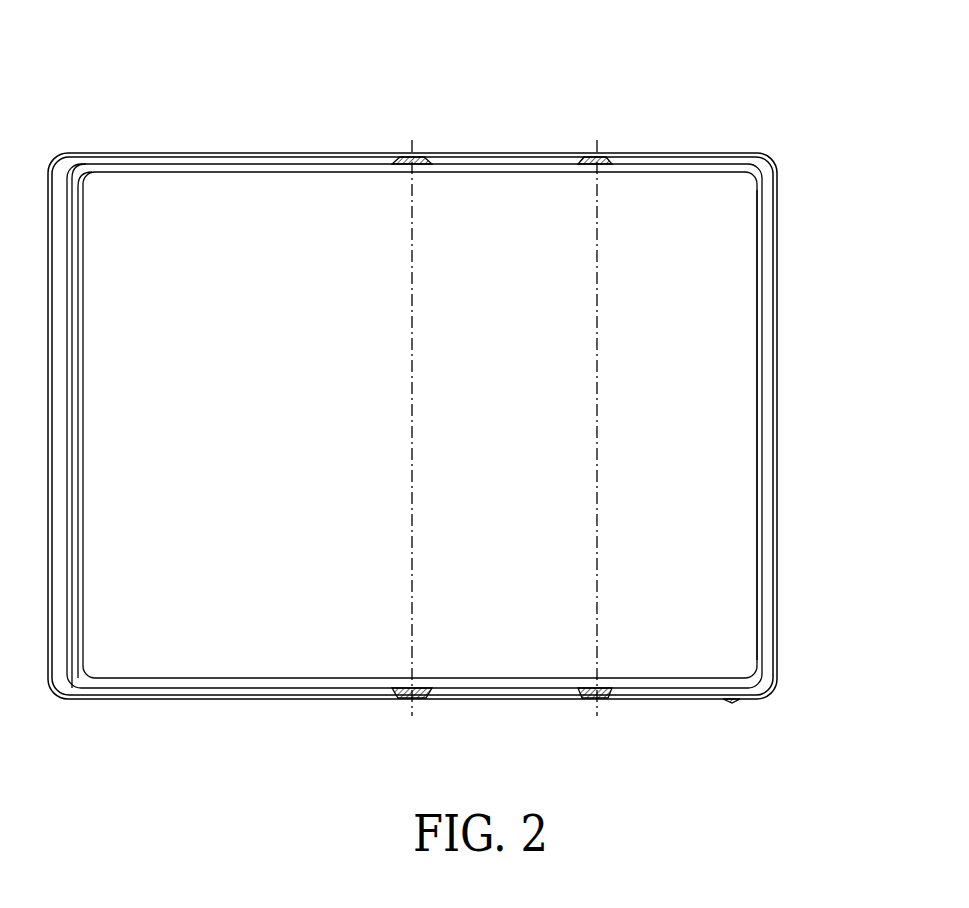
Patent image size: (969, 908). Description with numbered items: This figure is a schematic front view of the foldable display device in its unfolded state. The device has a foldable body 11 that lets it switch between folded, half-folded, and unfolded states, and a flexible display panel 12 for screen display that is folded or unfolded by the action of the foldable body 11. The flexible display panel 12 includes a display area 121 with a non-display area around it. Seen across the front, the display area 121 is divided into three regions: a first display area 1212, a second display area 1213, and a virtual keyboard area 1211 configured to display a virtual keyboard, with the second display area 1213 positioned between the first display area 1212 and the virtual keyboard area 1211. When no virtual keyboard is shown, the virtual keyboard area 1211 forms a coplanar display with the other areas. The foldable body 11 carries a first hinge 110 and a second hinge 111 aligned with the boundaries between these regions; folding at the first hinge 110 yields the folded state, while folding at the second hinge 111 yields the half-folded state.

The foldable body 11 is at (777, 184).
The flexible display panel 12 is at (758, 393).
The display area 121 is at (775, 94).
The virtual keyboard area 1211 is at (667, 187).
The first display area 1212 is at (230, 191).
The second display area 1213 is at (490, 187).
The first hinge 110 is at (428, 699).
The second hinge 111 is at (612, 699).